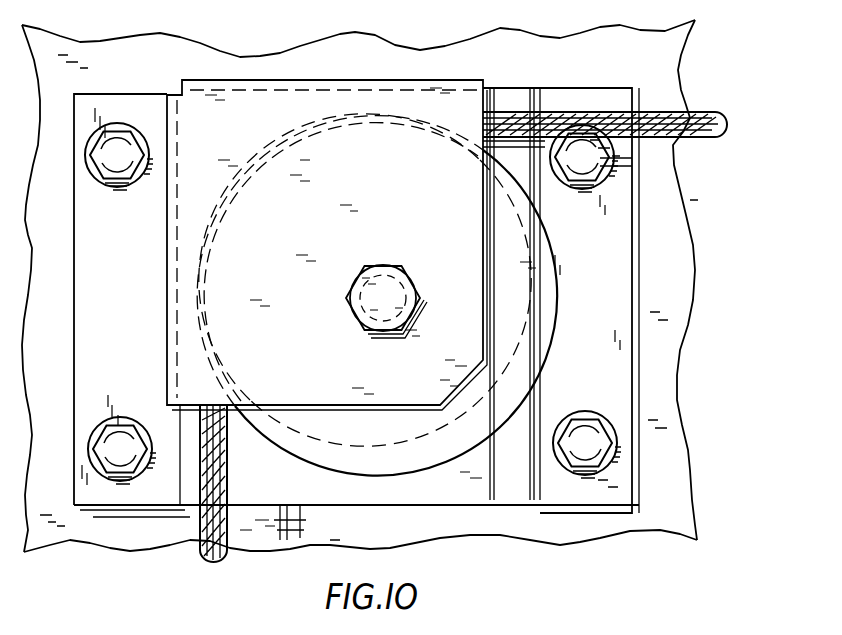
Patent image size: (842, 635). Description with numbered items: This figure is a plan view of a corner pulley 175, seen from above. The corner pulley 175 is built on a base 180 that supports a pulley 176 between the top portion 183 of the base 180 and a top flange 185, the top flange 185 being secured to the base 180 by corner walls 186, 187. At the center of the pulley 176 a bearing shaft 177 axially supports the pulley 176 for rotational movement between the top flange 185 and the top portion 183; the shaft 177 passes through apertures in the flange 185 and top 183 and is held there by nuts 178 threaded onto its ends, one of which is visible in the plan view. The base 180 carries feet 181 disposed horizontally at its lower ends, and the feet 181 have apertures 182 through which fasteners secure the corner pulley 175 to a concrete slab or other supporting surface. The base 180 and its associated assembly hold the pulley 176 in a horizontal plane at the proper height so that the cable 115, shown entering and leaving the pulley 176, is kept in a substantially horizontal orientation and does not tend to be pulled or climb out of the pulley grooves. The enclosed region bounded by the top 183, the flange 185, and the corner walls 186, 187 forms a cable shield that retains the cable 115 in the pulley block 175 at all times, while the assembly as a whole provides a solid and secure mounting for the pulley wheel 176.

The cable 115 is at (640, 110).
The corner pulley 175 is at (160, 68).
The pulley 176 is at (551, 249).
The bearing shaft 177 is at (397, 264).
The nuts 178 is at (417, 292).
The base 180 is at (537, 493).
The feet 181 is at (613, 293).
The apertures 182 is at (578, 428).
The top portion 183 is at (440, 493).
The top flange 185 is at (352, 199).
The corner wall 186 is at (170, 340).
The corner wall 187 is at (312, 80).